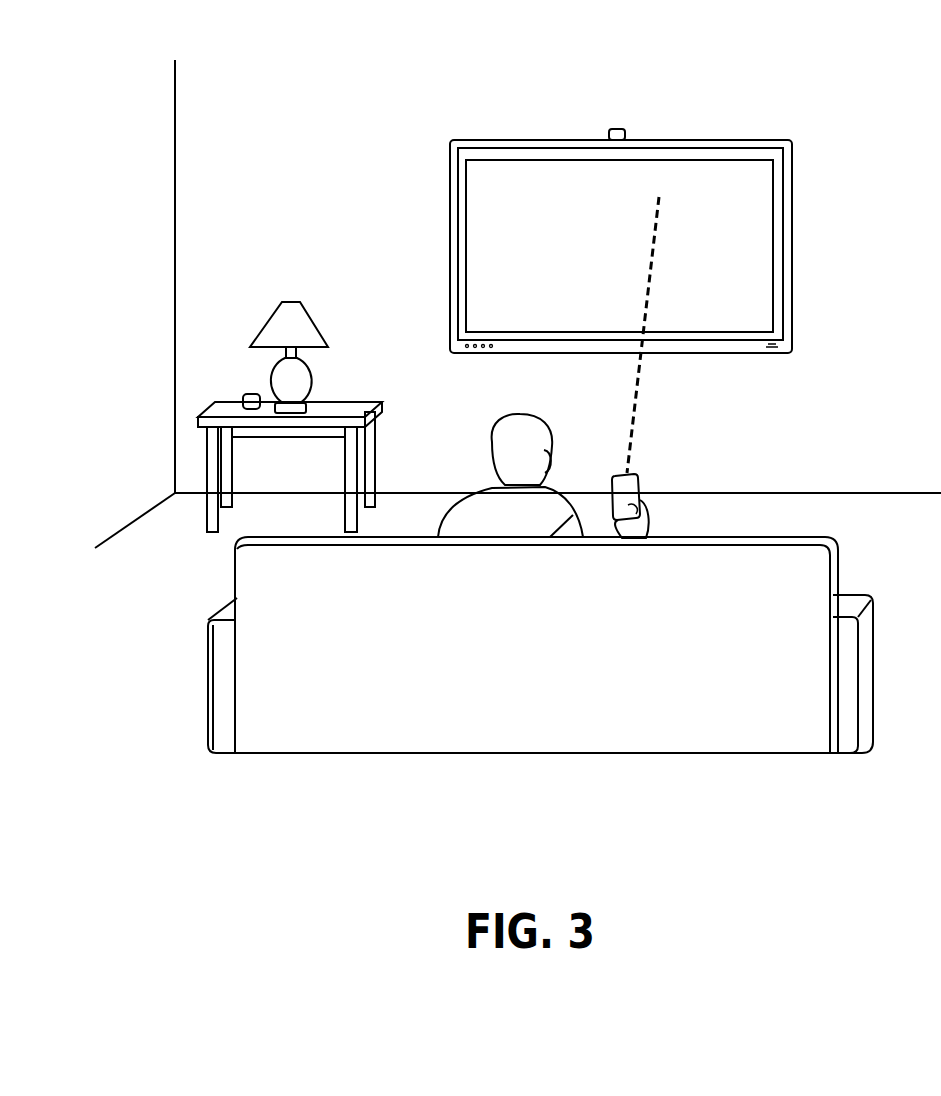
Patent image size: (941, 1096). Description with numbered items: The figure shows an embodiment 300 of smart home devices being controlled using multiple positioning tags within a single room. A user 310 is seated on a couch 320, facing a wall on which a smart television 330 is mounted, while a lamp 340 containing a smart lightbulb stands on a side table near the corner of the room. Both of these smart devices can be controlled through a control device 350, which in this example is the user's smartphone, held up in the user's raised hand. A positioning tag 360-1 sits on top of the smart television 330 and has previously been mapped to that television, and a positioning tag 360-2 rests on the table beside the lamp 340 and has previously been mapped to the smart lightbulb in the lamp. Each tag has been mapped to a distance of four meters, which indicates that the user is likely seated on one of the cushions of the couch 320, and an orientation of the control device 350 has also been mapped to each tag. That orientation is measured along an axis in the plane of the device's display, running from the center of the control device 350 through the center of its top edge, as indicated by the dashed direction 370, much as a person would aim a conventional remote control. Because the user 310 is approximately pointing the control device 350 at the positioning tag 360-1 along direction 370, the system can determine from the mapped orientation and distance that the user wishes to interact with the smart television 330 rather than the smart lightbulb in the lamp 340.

The embodiment 300 is at (96, 88).
The user 310 is at (490, 486).
The couch 320 is at (820, 756).
The smart television 330 is at (470, 140).
The lamp 340 is at (298, 301).
The control device 350 is at (641, 476).
The positioning tag 360-1 is at (617, 128).
The positioning tag 360-2 is at (250, 392).
The direction 370 is at (633, 422).